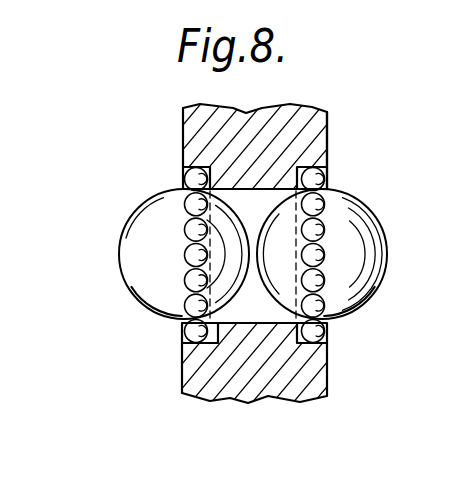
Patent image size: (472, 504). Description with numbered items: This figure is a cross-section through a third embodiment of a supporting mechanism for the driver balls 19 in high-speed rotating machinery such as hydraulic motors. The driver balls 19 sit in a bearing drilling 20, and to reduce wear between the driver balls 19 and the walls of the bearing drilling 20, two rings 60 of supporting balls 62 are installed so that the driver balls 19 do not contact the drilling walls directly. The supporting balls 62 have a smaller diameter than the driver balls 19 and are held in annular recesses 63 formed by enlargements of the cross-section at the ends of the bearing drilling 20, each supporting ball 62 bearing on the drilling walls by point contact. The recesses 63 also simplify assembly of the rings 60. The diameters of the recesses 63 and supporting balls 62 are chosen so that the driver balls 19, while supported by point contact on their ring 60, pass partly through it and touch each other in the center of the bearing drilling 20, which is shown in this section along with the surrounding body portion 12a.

The housing portion 12a is at (259, 128).
The bearing drilling 20 is at (288, 149).
The driver ball 19 is at (170, 226).
The supporting ball 62 is at (191, 279).
The ring of supporting balls 60 is at (165, 317).
The annular recess 63 is at (218, 326).